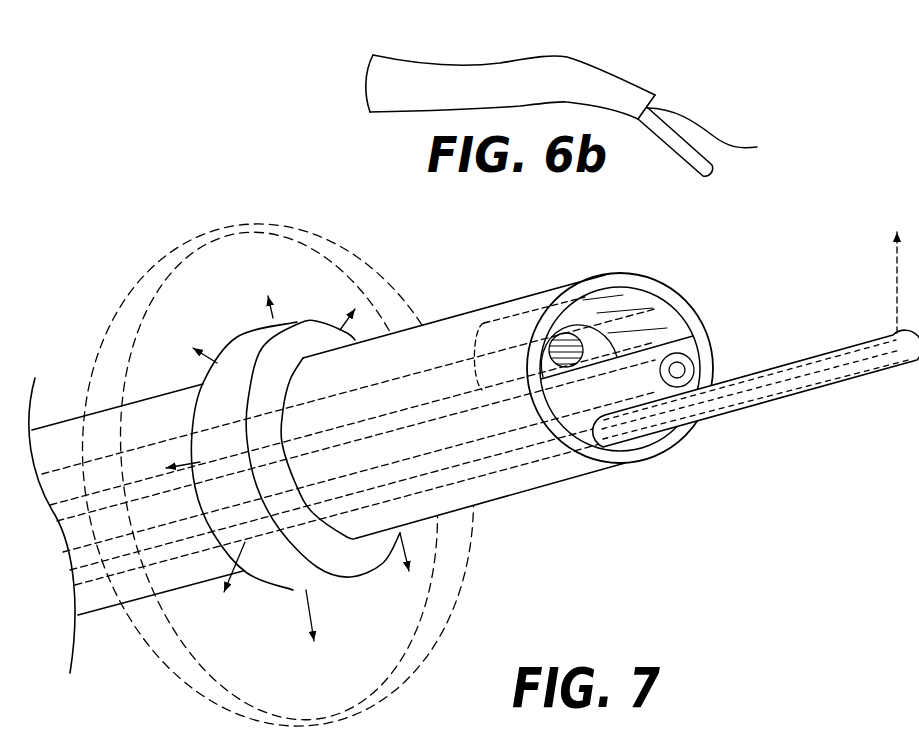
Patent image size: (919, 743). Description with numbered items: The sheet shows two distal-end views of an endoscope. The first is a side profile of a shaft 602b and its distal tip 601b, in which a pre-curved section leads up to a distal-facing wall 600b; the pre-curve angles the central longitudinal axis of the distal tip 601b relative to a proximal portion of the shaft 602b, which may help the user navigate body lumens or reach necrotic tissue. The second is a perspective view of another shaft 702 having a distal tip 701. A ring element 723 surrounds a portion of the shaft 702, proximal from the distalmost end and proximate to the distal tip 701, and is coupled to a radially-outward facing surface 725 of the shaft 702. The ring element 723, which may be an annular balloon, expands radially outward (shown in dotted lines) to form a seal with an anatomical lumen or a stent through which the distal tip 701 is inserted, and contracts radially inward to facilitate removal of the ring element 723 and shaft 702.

In FIG. 6B, the distal-facing wall 600b is at (722, 133).
In FIG. 6B, the distal tip 601b is at (684, 75).
In FIG. 6B, the shaft 602b is at (586, 54).
In FIG. 7, the distal tip 701 is at (572, 267).
In FIG. 7, the shaft 702 is at (446, 275).
In FIG. 7, the ring element 723 is at (300, 340).
In FIG. 7, the radially-outward facing surface 725 is at (500, 483).